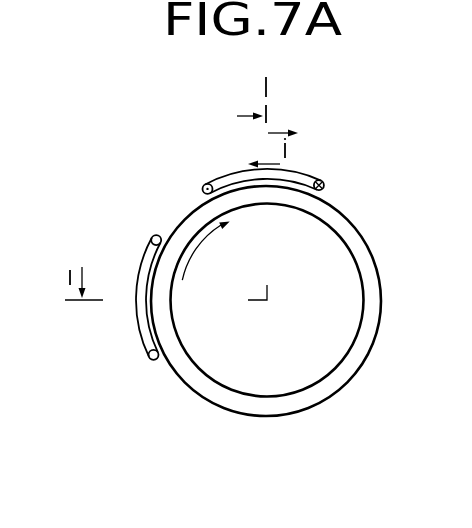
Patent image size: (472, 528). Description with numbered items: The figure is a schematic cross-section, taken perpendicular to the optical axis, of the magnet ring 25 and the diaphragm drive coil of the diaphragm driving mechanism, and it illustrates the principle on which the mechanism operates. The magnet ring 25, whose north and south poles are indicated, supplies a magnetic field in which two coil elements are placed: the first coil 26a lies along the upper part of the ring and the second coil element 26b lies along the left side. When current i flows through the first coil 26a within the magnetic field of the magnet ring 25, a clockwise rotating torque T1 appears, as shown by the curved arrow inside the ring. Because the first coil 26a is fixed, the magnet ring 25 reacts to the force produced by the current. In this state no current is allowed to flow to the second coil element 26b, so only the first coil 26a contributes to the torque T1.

The magnet ring 25 is at (370, 247).
The first coil 26a is at (305, 178).
The second coil element 26b is at (142, 327).
The clockwise rotating torque T1 is at (205, 250).